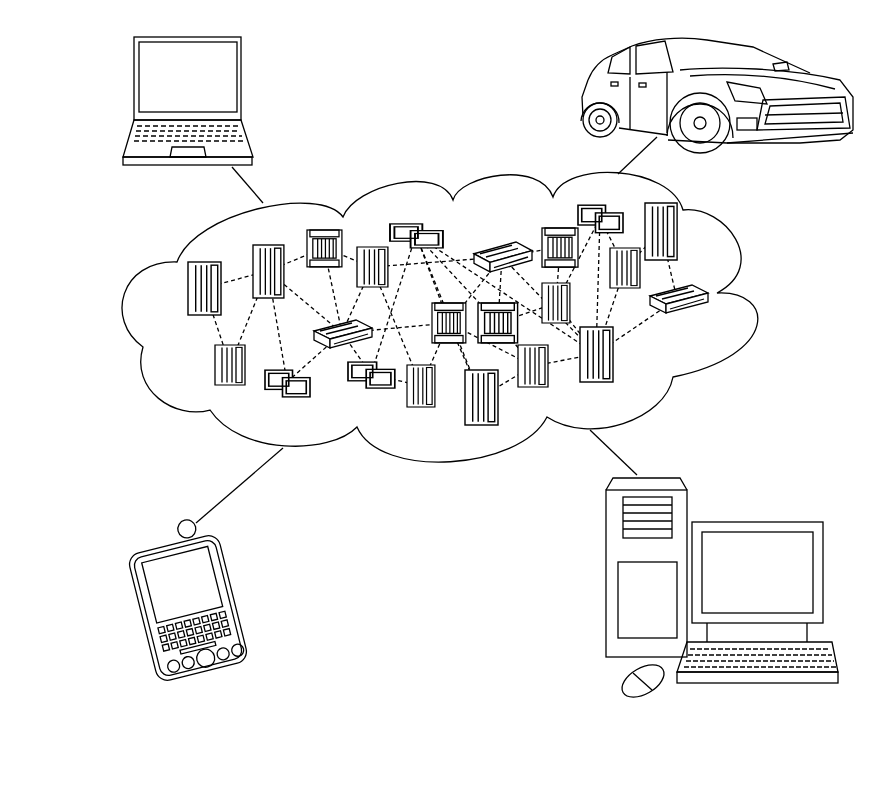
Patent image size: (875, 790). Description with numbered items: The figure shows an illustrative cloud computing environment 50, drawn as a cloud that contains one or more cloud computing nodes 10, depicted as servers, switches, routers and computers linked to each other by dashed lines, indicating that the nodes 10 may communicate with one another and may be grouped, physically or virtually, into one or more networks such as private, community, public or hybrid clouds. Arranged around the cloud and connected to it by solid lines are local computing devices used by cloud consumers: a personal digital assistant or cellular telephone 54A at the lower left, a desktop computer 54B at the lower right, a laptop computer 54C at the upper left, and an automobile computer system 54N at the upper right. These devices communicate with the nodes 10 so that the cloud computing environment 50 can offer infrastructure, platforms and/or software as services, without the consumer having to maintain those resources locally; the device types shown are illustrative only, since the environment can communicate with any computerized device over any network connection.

The cloud computing nodes 10 is at (487, 389).
The cloud computing environment 50 is at (753, 298).
The personal digital assistant (PDA) or cellular telephone 54A is at (236, 597).
The desktop computer 54B is at (757, 521).
The laptop computer 54C is at (245, 83).
The automobile computer system 54N is at (583, 97).